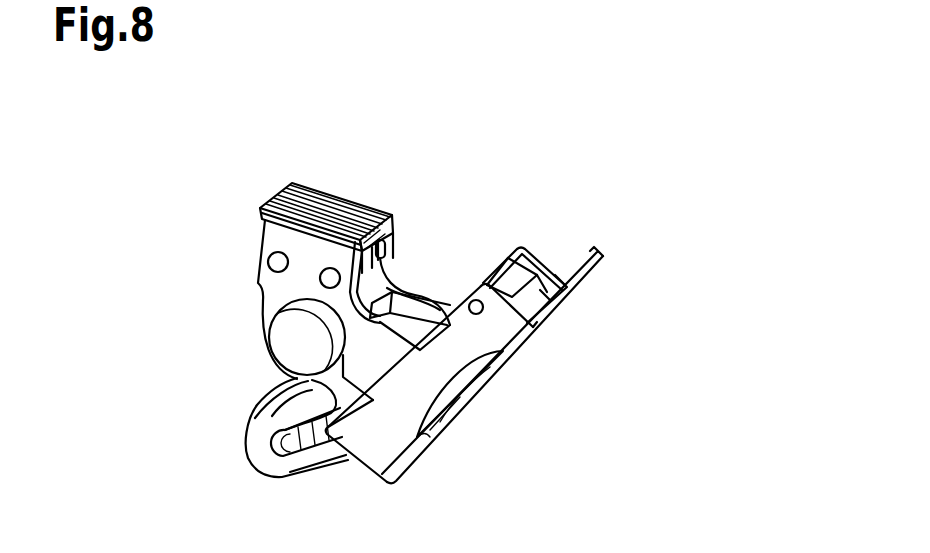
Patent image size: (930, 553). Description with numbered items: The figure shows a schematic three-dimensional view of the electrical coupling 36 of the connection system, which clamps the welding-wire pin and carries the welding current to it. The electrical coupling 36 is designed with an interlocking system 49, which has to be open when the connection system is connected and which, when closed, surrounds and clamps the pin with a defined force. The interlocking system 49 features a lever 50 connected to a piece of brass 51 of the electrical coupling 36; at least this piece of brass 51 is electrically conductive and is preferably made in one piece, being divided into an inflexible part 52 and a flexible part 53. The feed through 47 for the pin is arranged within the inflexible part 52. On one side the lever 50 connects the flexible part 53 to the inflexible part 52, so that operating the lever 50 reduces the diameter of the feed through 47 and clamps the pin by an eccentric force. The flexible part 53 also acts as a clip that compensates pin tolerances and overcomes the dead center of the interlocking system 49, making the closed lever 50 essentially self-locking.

The electrical coupling 36 is at (527, 120).
The feed through 47 is at (322, 322).
The interlocking system 49 is at (582, 212).
The lever 50 is at (490, 332).
The piece of brass 51 is at (340, 150).
The inflexible part 52 is at (272, 290).
The flexible part 53 is at (260, 447).